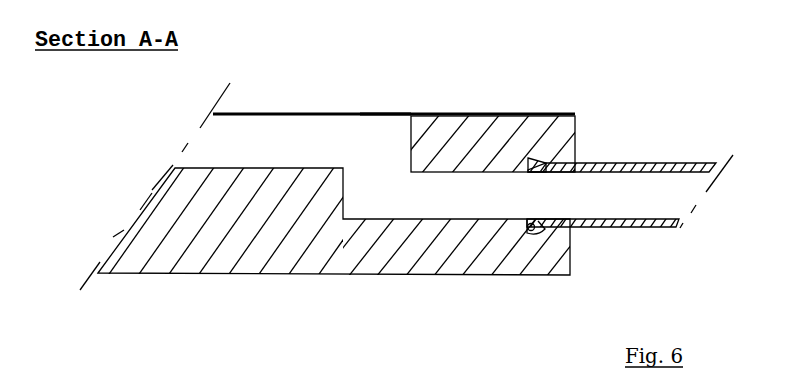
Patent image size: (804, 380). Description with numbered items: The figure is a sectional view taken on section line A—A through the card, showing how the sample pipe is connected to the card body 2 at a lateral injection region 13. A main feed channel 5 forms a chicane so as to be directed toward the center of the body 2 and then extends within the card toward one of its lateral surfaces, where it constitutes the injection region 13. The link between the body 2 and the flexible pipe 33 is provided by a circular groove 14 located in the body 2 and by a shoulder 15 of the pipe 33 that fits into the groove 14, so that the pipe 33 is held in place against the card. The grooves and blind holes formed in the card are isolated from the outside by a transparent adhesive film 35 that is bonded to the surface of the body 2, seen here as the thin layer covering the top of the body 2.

The body 2 is at (253, 258).
The main feed channel 5 is at (237, 143).
The transparent adhesive film 35 is at (382, 113).
The injection region 13 is at (548, 190).
The circular groove 14 is at (528, 159).
The shoulder 15 is at (530, 229).
The flexible pipe 33 is at (663, 163).